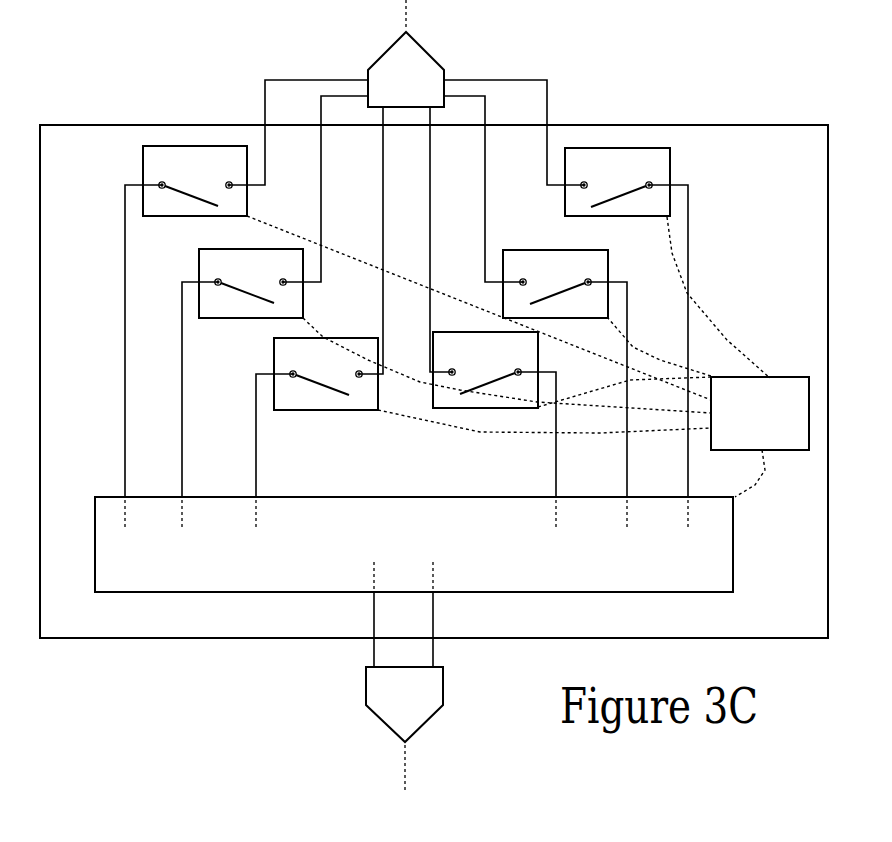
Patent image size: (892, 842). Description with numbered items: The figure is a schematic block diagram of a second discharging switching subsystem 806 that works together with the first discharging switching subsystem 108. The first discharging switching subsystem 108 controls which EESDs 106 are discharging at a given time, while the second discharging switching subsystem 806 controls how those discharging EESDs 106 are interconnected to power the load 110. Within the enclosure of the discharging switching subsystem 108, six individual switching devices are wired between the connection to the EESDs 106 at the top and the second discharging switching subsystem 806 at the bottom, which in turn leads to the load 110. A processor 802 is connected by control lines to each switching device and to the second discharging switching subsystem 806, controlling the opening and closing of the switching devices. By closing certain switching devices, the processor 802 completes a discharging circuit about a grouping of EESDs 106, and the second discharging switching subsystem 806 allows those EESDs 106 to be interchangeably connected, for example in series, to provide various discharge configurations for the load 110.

The discharging switching subsystem 108 is at (434, 381).
The EESDs 106 is at (406, 53).
The load 110 is at (404, 692).
The processor 802 is at (760, 437).
The second discharging switching subsystem 806 is at (414, 544).